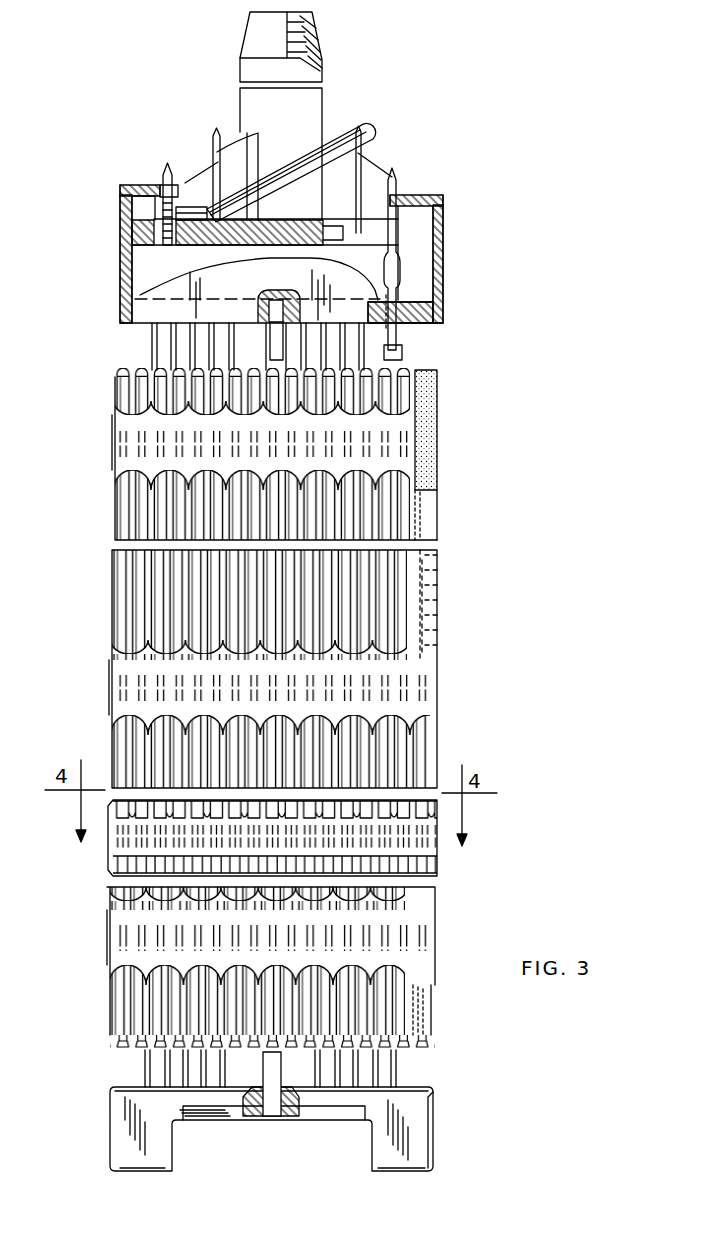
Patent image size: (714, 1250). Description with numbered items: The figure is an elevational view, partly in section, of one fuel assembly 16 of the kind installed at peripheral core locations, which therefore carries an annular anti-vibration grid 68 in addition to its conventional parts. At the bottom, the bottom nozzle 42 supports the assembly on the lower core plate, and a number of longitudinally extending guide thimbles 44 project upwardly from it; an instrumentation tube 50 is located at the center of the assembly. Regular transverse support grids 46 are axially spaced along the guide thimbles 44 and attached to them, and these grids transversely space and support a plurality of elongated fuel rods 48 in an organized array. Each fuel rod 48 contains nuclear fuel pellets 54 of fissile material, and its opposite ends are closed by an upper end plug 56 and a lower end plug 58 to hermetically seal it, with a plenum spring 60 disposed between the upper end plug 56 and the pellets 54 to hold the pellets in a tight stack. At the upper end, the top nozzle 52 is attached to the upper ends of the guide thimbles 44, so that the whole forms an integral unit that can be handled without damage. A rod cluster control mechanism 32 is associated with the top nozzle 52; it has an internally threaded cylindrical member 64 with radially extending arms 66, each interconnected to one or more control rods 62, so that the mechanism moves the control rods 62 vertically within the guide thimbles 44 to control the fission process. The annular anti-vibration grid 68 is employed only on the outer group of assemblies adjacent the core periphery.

The fuel assembly 16 is at (361, 248).
The rod cluster control mechanism 32 is at (384, 150).
The bottom nozzle 42 is at (313, 1121).
The guide thimbles 44 is at (180, 352).
The transverse support grids 46 is at (113, 434).
The fuel rods 48 is at (279, 702).
The instrumentation tube 50 is at (271, 1088).
The top nozzle 52 is at (442, 255).
The nuclear fuel pellets 54 is at (430, 605).
The upper end plug 56 is at (121, 373).
The lower end plug 58 is at (118, 1041).
The plenum spring 60 is at (440, 430).
The control rods 62 is at (400, 300).
The internally threaded cylindrical member 64 is at (326, 105).
The arms 66 is at (190, 165).
The annular anti-vibration grids 68 is at (437, 845).